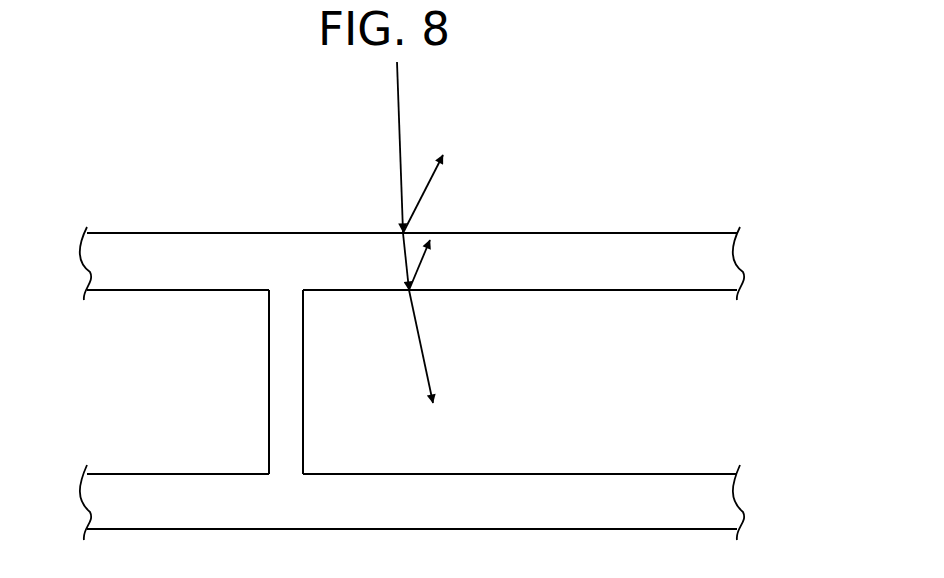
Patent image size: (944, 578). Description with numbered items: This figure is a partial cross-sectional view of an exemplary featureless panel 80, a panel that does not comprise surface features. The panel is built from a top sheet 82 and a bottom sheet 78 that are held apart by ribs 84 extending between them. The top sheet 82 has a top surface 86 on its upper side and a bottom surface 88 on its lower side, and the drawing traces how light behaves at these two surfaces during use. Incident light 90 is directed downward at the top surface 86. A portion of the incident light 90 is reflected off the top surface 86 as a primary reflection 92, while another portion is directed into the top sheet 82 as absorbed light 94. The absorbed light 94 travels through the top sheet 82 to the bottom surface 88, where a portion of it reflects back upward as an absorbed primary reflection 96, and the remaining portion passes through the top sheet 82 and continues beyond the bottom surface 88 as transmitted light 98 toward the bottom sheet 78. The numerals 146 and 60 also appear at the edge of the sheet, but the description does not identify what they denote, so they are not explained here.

The bottom sheet 78 is at (520, 511).
The featureless panel 80 is at (545, 138).
The top sheet 82 is at (626, 272).
The ribs 84 is at (300, 394).
The top surface 86 is at (583, 233).
The bottom surface 88 is at (585, 290).
The incident light 90 is at (398, 117).
The primary reflection 92 is at (425, 193).
The absorbed light 94 is at (402, 260).
The absorbed primary reflection 96 is at (422, 267).
The transmitted light 98 is at (419, 335).
The element of adjacent figure 146 is at (727, 0).
The element of adjacent figure 60 is at (622, 7).